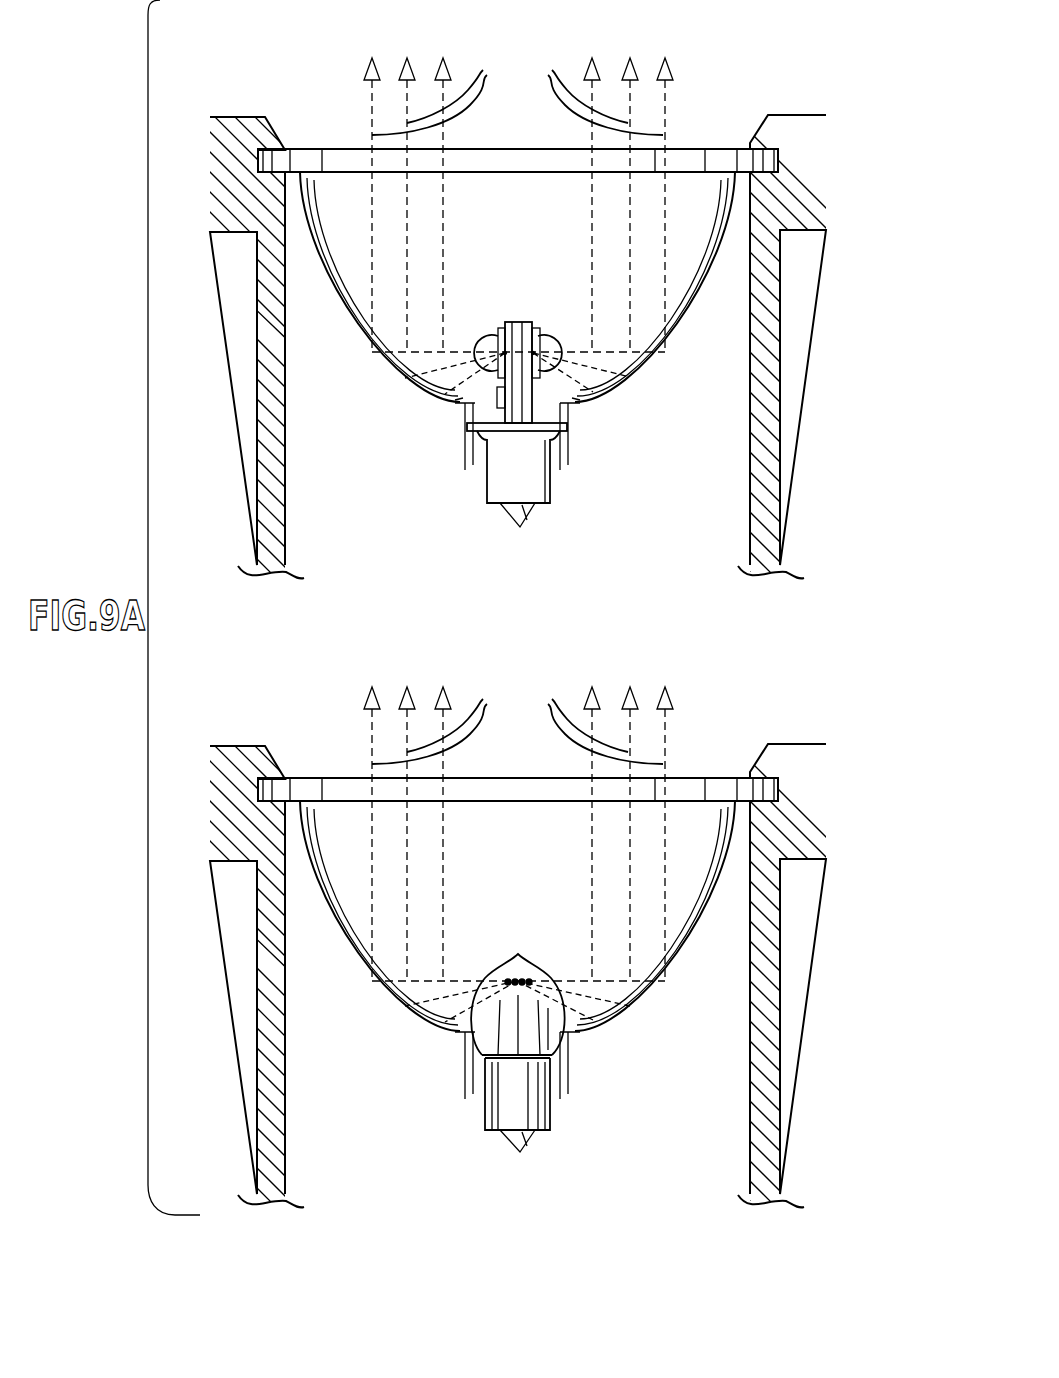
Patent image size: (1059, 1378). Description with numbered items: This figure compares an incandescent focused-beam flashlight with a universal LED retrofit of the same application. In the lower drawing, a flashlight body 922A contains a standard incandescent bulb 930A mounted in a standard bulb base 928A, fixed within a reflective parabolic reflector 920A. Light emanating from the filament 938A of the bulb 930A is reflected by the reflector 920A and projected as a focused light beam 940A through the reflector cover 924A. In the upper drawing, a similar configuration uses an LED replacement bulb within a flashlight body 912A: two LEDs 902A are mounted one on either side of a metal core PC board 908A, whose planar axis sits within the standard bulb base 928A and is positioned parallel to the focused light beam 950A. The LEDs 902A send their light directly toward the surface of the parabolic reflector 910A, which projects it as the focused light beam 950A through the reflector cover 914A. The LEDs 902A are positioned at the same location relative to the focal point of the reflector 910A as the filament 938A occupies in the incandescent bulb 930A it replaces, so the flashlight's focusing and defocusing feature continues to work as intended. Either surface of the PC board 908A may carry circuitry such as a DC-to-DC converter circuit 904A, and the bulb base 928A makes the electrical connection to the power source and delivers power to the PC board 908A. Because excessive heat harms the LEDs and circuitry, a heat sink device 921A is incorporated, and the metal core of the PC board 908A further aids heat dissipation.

The LEDs 902A is at (558, 340).
The DC-to-DC converter circuit 904A is at (465, 398).
The metal core PC board 908A is at (467, 420).
The parabolic reflector 910A is at (700, 300).
The flashlight body 912A is at (806, 115).
The reflector cover 914A is at (310, 149).
The parabolic reflector 920A is at (396, 1002).
The heat sink device 921A is at (505, 375).
The flashlight body 922A is at (285, 1120).
The reflector cover 924A is at (330, 777).
The standard bulb base 928A is at (553, 482).
The standard incandescent bulb 930A is at (567, 1038).
The filament 938A is at (520, 972).
The focused light beam 940A is at (518, 839).
The focused light beam 950A is at (518, 210).